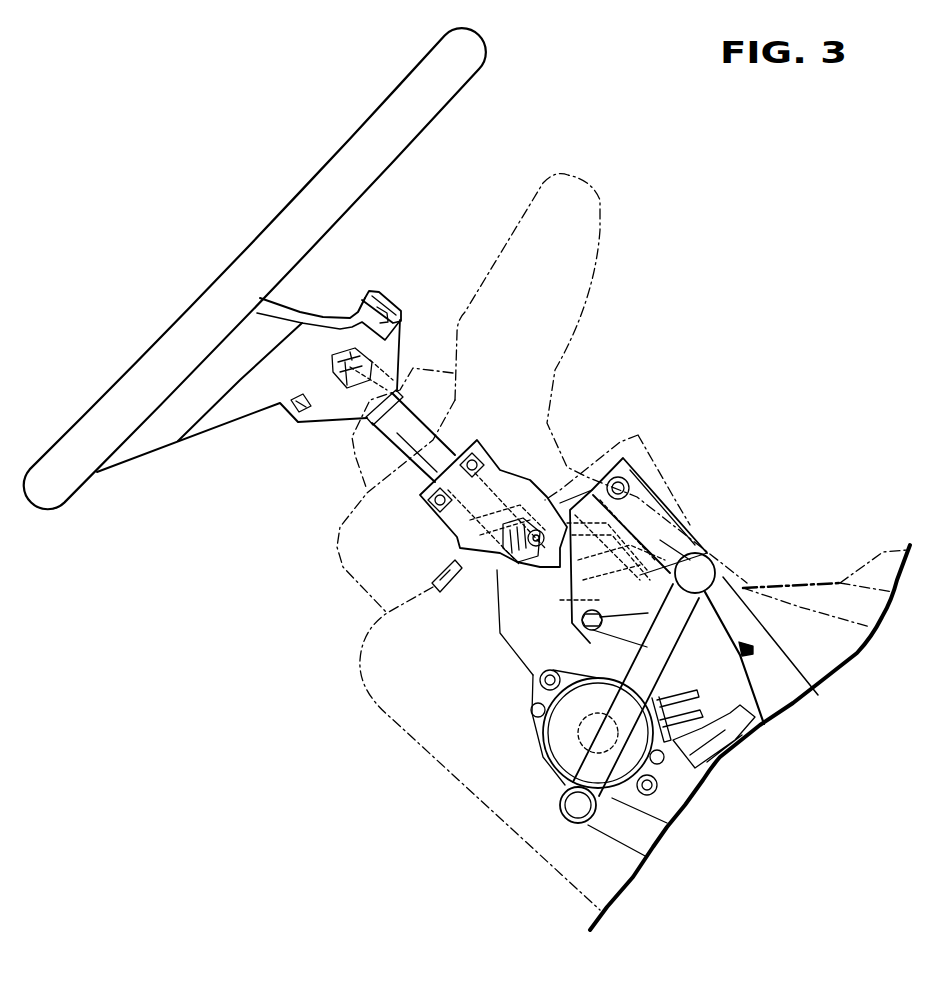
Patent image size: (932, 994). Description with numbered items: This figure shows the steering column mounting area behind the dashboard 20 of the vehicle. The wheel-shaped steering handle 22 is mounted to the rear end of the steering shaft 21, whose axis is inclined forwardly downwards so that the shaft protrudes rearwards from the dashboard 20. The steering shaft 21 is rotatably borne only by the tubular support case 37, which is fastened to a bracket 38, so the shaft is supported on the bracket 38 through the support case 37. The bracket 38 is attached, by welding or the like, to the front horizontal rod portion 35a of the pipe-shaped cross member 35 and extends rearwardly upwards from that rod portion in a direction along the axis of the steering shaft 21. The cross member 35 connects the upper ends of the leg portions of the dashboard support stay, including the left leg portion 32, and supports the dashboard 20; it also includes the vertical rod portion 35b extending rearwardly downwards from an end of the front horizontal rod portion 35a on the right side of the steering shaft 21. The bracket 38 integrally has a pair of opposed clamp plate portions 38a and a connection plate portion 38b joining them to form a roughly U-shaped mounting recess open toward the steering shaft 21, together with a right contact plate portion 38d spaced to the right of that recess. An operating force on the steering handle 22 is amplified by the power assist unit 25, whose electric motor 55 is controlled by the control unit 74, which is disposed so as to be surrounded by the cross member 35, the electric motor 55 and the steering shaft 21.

The dashboard 20 is at (638, 435).
The steering shaft 21 is at (407, 433).
The steering handle 22 is at (73, 473).
The power assist unit 25 is at (727, 603).
The left leg portion 32 is at (773, 657).
The cross member 35 is at (560, 808).
The front horizontal rod portion 35a is at (713, 563).
The vertical rod portion 35b is at (748, 713).
The support case 37 is at (505, 470).
The bracket 38 is at (604, 466).
The clamp plate portion 38a is at (657, 523).
The connection plate portion 38b is at (670, 480).
The right contact plate portion 38d is at (583, 561).
The electric motor 55 is at (547, 752).
The control unit 74 is at (578, 643).